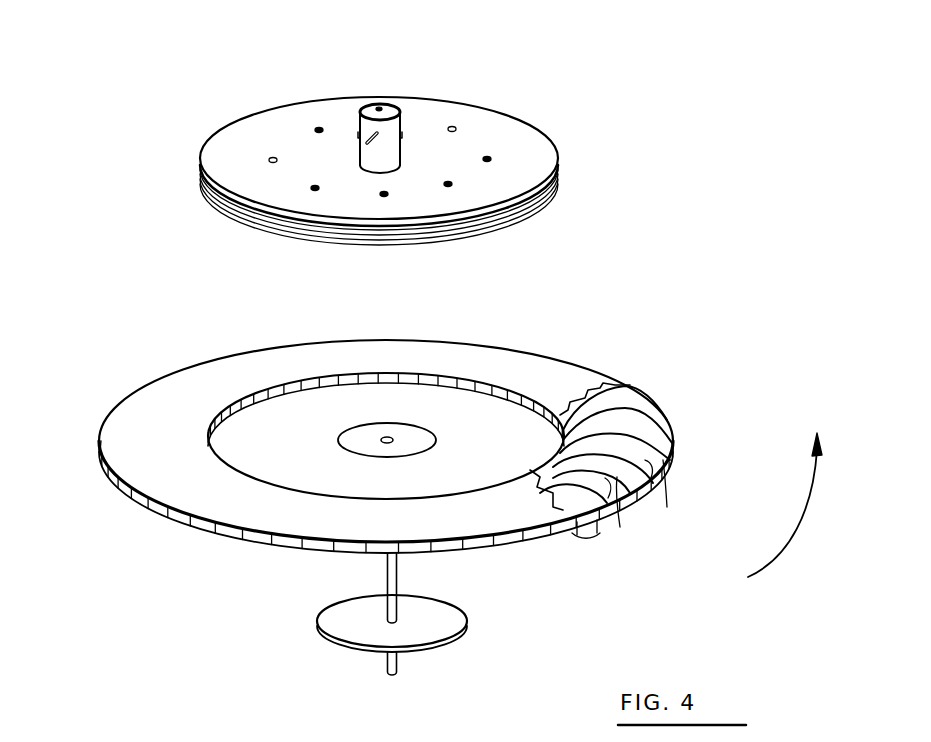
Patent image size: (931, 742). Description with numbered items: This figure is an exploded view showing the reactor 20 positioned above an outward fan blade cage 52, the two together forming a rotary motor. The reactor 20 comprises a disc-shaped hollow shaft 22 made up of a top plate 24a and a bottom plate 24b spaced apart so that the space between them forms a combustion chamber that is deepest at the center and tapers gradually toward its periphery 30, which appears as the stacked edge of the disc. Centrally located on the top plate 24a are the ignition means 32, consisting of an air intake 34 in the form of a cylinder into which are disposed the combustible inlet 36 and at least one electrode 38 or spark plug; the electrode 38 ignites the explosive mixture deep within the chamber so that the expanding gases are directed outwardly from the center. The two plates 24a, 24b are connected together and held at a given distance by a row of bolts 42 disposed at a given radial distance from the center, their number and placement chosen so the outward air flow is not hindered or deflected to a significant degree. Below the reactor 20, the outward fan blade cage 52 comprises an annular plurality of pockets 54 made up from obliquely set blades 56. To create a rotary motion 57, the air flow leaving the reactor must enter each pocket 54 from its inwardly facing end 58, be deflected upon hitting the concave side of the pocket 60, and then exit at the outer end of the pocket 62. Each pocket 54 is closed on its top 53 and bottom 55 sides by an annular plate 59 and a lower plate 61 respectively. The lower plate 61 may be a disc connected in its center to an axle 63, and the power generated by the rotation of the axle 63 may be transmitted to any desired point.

The reactor 20 is at (410, 122).
The disc-shaped hollow shaft 22 is at (245, 148).
The top plate 24a is at (492, 127).
The bottom plate 24b is at (517, 217).
The periphery 30 is at (550, 190).
The ignition means 32 is at (371, 86).
The air intake 34 is at (377, 109).
The combustible inlet 36 is at (380, 135).
The electrode 38 is at (356, 136).
The bolts 42 is at (277, 160).
The outward fan blade cage 52 is at (452, 491).
The top side 53 is at (630, 388).
The pocket 54 is at (592, 533).
The bottom side 55 is at (158, 513).
The blades 56 is at (645, 455).
The rotary motion 57 is at (815, 508).
The inwardly facing end 58 is at (556, 416).
The annular plate 59 is at (140, 462).
The concave side of the pocket 60 is at (608, 477).
The lower plate 61 is at (304, 471).
The outer end of the pocket 62 is at (229, 529).
The axle 63 is at (387, 573).